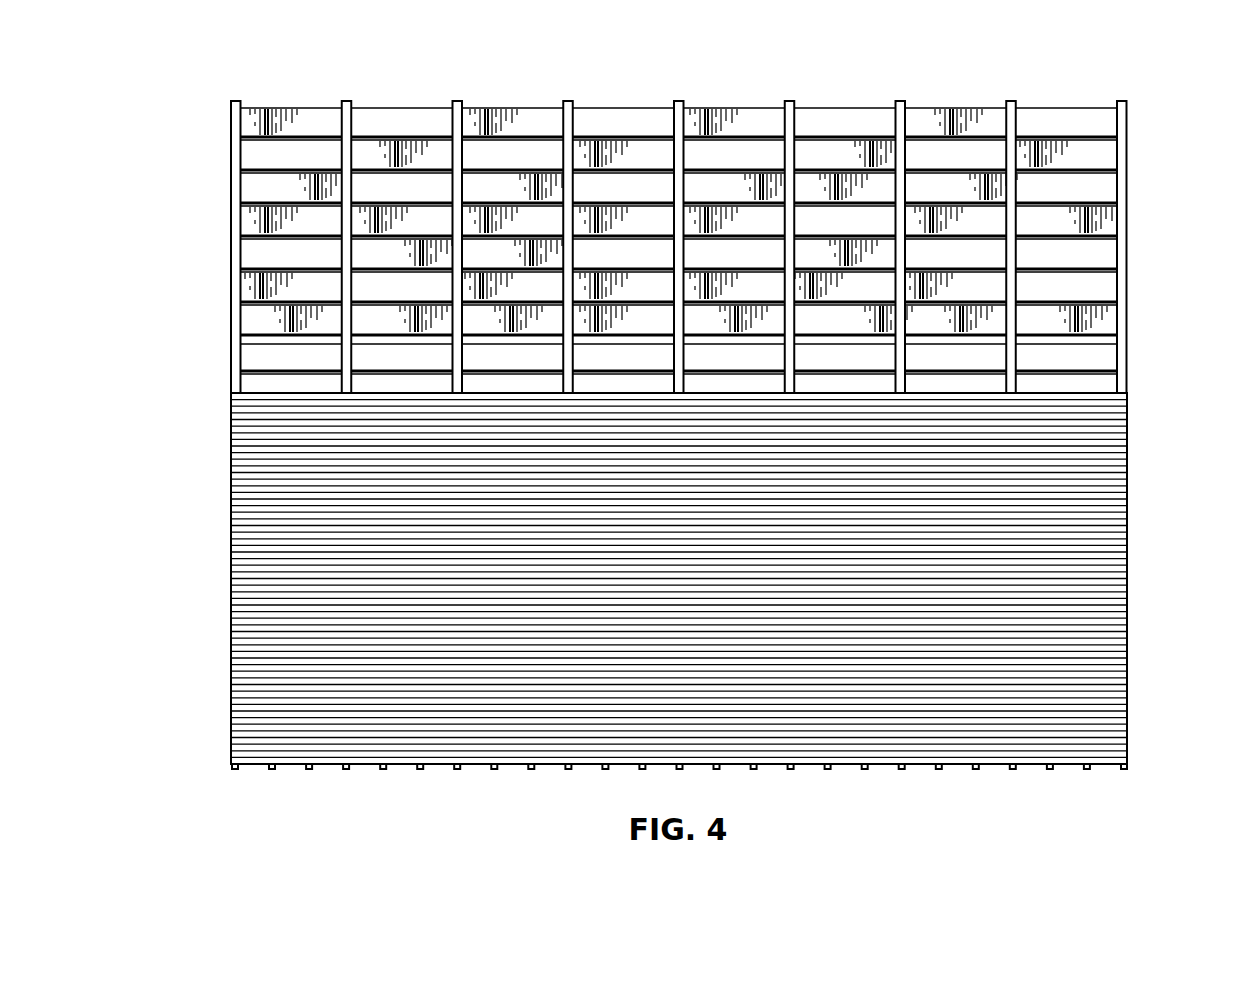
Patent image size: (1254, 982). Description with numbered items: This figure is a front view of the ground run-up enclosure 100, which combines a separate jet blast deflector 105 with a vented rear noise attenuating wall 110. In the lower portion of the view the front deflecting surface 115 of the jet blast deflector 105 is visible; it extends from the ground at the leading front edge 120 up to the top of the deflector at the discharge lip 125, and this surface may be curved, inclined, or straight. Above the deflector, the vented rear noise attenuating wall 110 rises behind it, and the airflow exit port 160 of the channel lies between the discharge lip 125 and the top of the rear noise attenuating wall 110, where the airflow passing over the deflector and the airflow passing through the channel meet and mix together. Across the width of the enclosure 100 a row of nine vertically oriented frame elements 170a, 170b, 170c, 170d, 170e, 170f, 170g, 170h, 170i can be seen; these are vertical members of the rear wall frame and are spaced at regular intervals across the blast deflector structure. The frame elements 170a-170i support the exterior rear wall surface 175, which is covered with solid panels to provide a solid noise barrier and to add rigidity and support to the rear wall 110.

The ground run-up enclosure 100 is at (703, 440).
The jet blast deflector 105 is at (1127, 602).
The vented rear noise attenuating wall 110 is at (284, 106).
The front deflecting surface 115 is at (1027, 651).
The leading front edge 120 is at (381, 767).
The discharge lip 125 is at (945, 405).
The airflow exit port 160 is at (1097, 361).
The vertically oriented frame element 170a is at (232, 101).
The vertically oriented frame element 170b is at (344, 101).
The vertically oriented frame element 170c is at (455, 101).
The vertically oriented frame element 170d is at (566, 101).
The vertically oriented frame element 170e is at (677, 101).
The vertically oriented frame element 170f is at (787, 101).
The vertically oriented frame element 170g is at (898, 101).
The vertically oriented frame element 170h is at (1009, 101).
The vertically oriented frame element 170i is at (1120, 101).
The exterior rear wall surface 175 is at (272, 250).